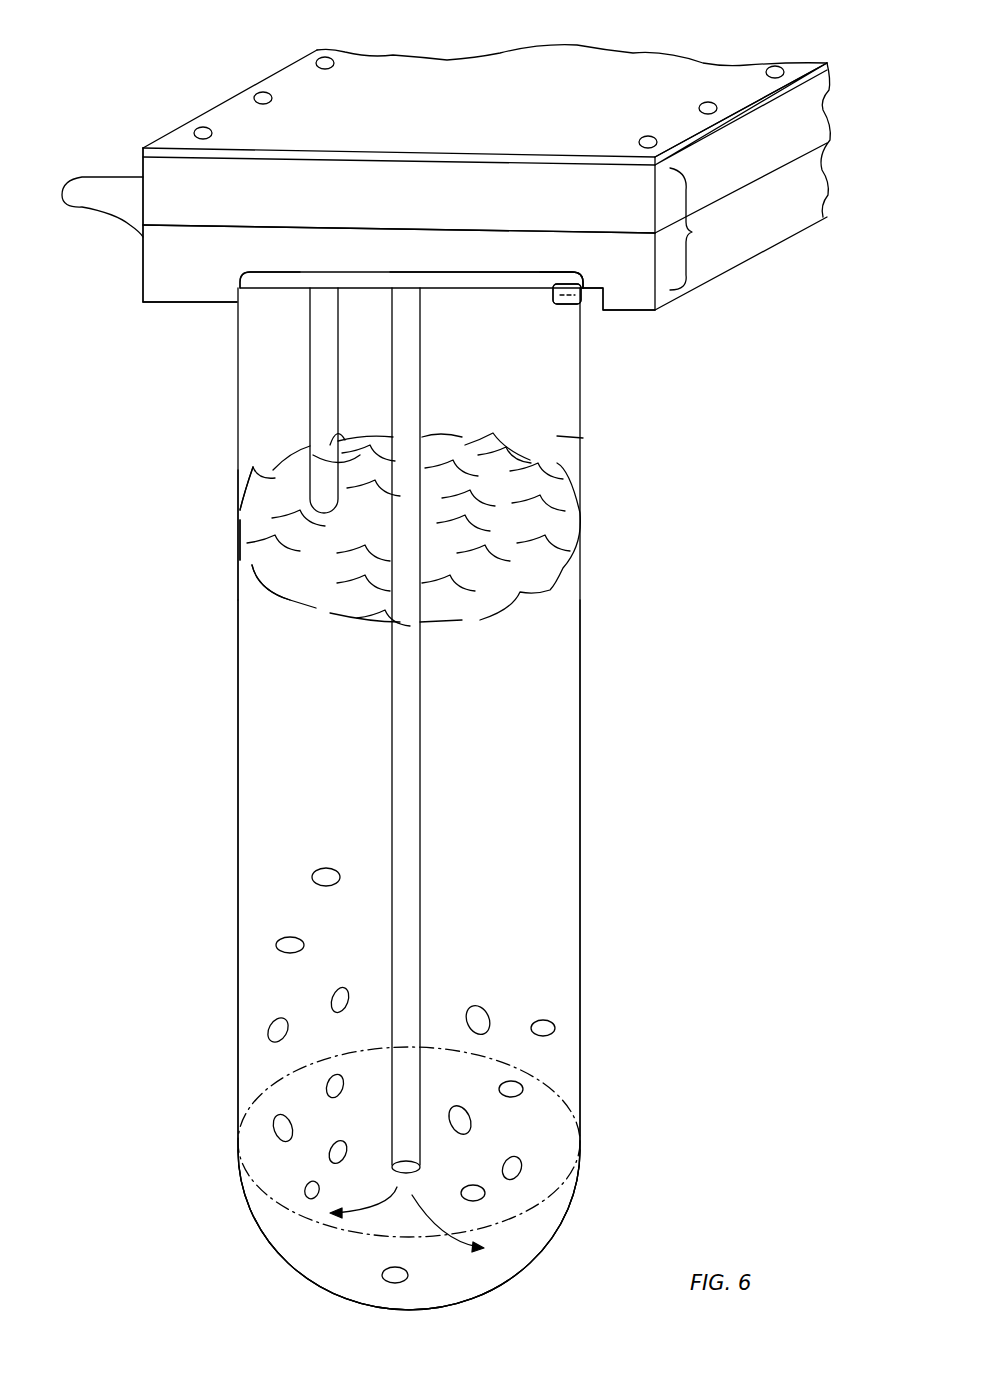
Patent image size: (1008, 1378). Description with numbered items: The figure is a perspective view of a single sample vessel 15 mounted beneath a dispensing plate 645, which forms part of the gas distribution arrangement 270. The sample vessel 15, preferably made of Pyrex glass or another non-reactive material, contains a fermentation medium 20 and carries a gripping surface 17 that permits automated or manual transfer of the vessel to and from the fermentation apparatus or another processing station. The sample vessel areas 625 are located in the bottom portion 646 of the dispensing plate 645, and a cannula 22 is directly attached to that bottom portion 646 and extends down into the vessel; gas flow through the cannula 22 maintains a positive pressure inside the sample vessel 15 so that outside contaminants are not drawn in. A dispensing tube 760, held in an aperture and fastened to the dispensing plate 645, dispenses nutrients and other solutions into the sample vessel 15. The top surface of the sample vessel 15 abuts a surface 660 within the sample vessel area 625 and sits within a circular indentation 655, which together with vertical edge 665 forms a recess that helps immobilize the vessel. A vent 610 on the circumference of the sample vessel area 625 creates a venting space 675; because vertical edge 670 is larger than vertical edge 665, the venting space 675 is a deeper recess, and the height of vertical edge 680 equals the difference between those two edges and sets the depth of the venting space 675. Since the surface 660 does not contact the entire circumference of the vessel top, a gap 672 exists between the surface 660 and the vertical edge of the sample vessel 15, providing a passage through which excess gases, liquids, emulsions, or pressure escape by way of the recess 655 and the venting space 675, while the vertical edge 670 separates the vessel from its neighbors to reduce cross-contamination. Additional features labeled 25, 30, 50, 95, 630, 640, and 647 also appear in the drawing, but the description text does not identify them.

The sample vessel 15 is at (580, 790).
The gripping surface 17 is at (240, 490).
The fermentation medium 20 is at (542, 868).
The cannula 22 is at (428, 940).
The bottom region 25 is at (505, 1240).
The bubbles 30 is at (262, 1130).
The foam 50 is at (557, 437).
The tube wall 95 is at (240, 433).
The gas distribution arrangement 270 is at (790, 276).
The vent 610 is at (597, 272).
The sample vessel area 625 is at (418, 272).
The nozzle 630 is at (98, 177).
The hole 640 is at (263, 93).
The dispensing plate 645 is at (700, 228).
The bottom portion 646 is at (143, 272).
The top edge 647 is at (800, 103).
The indentation 655 is at (252, 290).
The surface 660 is at (277, 287).
The vertical edge 665 is at (237, 302).
The vertical edge 670 is at (603, 300).
The gap 672 is at (573, 305).
The venting space 675 is at (573, 280).
The vertical edge 680 is at (553, 290).
The dispensing tube 760 is at (310, 370).